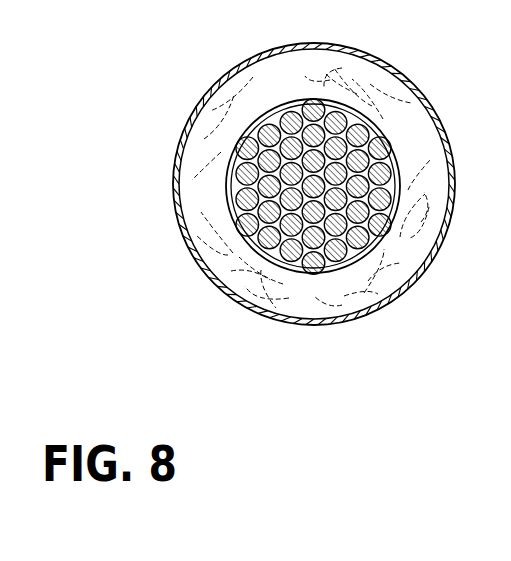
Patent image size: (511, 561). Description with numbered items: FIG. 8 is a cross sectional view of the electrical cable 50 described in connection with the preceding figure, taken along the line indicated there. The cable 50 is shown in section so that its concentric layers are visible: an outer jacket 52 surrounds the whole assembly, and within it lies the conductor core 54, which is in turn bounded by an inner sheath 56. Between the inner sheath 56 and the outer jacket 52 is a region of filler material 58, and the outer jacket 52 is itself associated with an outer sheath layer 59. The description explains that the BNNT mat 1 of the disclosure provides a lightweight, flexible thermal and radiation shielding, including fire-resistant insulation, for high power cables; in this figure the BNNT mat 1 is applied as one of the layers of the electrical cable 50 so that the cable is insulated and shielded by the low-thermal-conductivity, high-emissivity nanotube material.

The cable 50 is at (302, 195).
The outer jacket 52 is at (321, 184).
The conductor strands 54 is at (238, 166).
The inner sheath 56 is at (226, 198).
The filler material 58 is at (395, 268).
The outer sheath layer 59 is at (449, 228).
The BNNT mat 1 is at (451, 184).